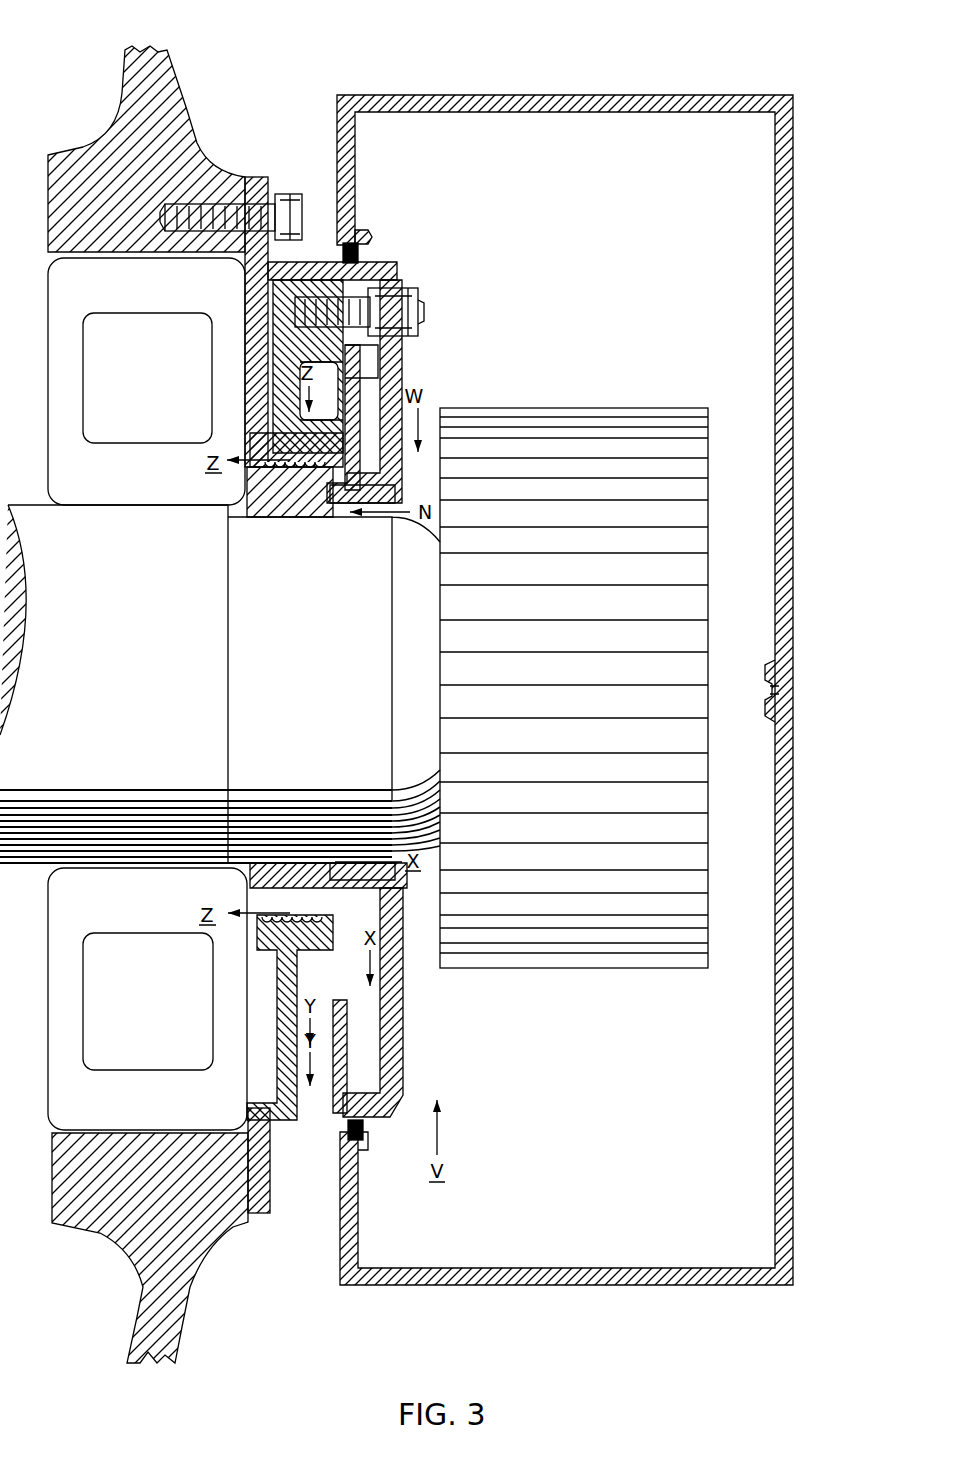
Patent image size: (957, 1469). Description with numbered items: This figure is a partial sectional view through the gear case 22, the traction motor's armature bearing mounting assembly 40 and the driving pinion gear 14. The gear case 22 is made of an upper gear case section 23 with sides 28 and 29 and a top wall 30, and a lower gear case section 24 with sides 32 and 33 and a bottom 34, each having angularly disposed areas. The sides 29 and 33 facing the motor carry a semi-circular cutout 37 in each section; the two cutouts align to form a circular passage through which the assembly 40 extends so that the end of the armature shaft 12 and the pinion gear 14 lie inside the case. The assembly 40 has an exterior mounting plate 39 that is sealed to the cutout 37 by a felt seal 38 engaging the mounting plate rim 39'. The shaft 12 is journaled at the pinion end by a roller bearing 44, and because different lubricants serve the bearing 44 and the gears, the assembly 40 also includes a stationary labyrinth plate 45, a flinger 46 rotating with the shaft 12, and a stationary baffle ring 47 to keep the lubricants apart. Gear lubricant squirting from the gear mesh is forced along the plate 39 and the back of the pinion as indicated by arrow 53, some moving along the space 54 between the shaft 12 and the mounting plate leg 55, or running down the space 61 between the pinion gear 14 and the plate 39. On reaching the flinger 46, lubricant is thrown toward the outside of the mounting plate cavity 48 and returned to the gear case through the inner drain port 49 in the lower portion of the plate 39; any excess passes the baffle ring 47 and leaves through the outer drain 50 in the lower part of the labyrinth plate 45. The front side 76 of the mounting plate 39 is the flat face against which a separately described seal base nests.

The armature shaft 12 is at (167, 631).
The pinion gear 14 is at (693, 452).
The gear case 22 is at (805, 250).
The upper gear case section 23 is at (690, 78).
The lower gear case section 24 is at (738, 1290).
The side 28 is at (785, 187).
The side 29 is at (348, 168).
The top wall 30 is at (573, 94).
The side 32 is at (790, 1143).
The side 33 is at (357, 1226).
The bottom 34 is at (596, 1285).
The semi-circular cutout 37 is at (372, 238).
The felt seal 38 is at (357, 243).
The mounting plate 39 is at (352, 695).
The mounting plate rim 39' is at (382, 247).
The armature bearing mounting assembly 40 is at (320, 228).
The roller bearing 44 is at (155, 463).
The labyrinth plate 45 is at (280, 422).
The flinger 46 is at (361, 417).
The baffle ring 47 is at (338, 1030).
The mounting plate cavity 48 is at (358, 1076).
The inner drain port 49 is at (405, 1097).
The outer drain 50 is at (313, 1132).
The arrow 53 is at (420, 895).
The space 54 is at (330, 864).
The mounting plate leg 55 is at (395, 494).
The space 61 is at (432, 415).
The front side 76 is at (410, 375).